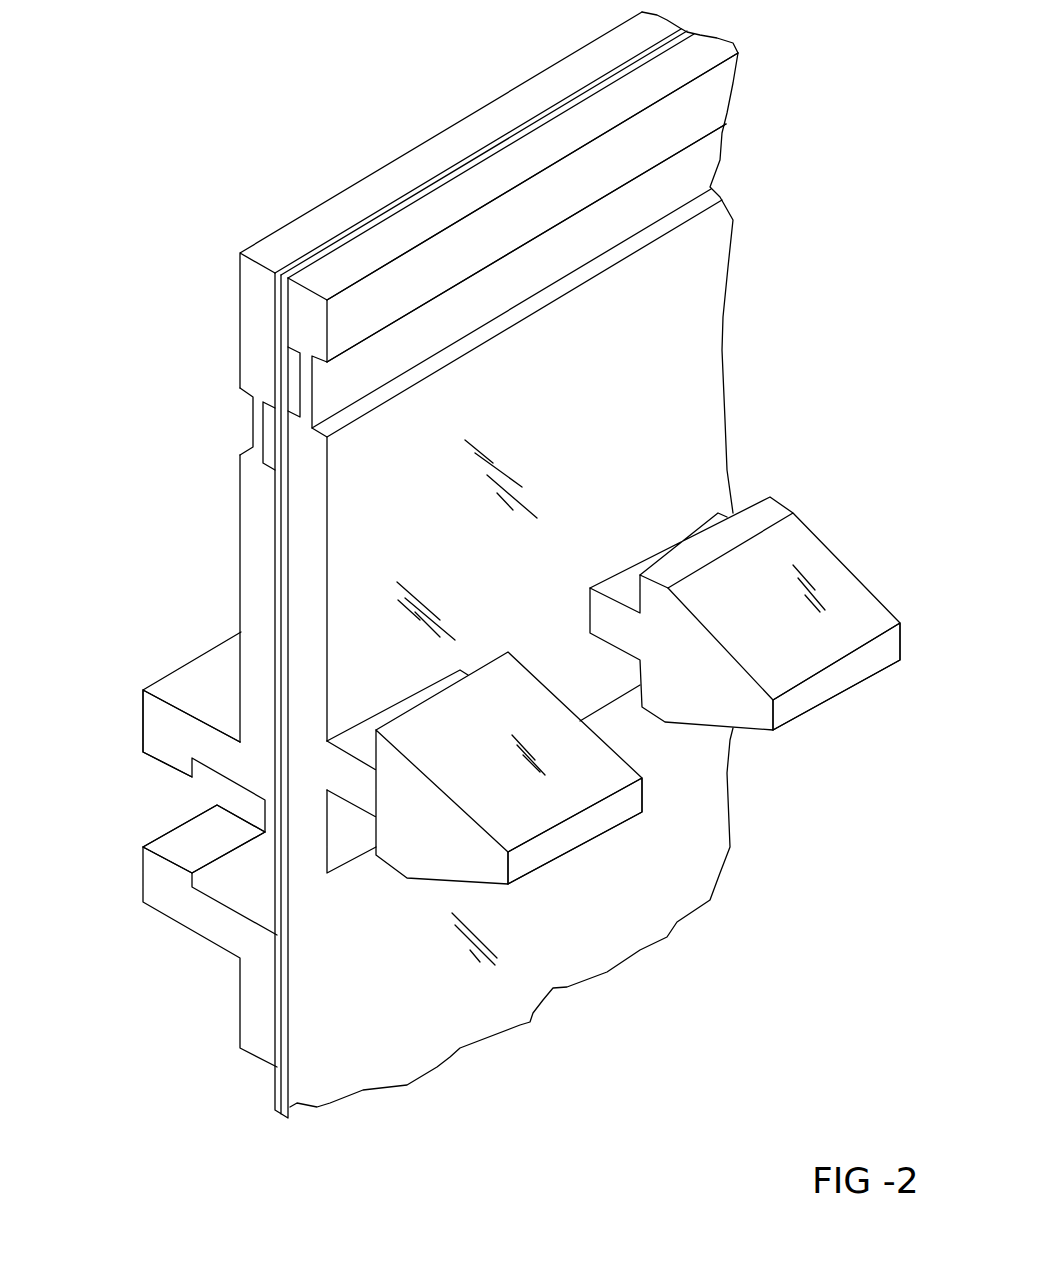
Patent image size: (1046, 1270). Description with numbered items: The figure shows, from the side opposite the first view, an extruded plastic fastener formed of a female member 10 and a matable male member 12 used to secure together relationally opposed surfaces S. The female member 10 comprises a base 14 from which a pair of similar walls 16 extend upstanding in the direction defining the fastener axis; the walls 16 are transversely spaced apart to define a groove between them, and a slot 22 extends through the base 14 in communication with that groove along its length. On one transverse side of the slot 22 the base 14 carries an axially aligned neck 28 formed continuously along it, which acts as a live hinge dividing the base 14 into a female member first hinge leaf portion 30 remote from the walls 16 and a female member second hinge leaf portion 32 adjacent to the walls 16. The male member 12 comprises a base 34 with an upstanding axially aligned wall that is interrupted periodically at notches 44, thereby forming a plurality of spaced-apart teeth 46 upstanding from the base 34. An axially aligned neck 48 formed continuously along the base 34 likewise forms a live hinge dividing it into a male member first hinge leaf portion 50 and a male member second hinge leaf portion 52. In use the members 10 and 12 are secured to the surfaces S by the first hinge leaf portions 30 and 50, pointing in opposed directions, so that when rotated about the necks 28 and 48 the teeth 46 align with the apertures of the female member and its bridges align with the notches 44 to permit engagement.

The female extruded plastic fastener member 10 is at (152, 773).
The male member 12 is at (840, 533).
The base 14 is at (258, 1030).
The walls 16 is at (187, 683).
The slot 22 is at (245, 800).
The neck 28 is at (257, 433).
The female member first hinge leaf portion 30 is at (253, 547).
The female member second hinge leaf portion 32 is at (255, 325).
The base 34 is at (702, 348).
The notches 44 is at (565, 650).
The teeth 46 is at (558, 837).
The neck 48 is at (698, 172).
The male member first hinge leaf portion 50 is at (545, 423).
The male member second hinge leaf portion 52 is at (713, 95).
The surfaces S is at (277, 1097).